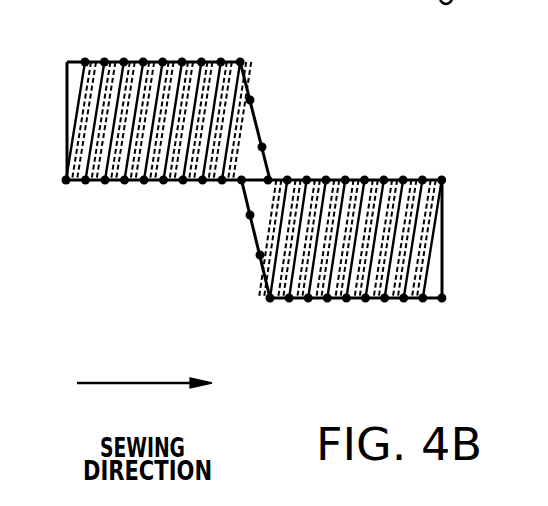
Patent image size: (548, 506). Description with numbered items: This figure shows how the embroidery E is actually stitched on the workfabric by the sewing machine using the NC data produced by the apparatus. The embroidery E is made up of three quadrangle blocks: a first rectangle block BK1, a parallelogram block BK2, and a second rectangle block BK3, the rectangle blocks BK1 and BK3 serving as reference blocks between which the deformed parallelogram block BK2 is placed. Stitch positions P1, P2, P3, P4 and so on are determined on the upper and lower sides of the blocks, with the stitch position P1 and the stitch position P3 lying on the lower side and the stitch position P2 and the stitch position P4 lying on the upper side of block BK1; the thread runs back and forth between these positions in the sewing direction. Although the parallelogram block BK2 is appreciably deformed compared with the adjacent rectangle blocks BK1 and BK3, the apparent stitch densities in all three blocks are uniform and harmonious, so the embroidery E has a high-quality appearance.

The embroidery E is at (430, 116).
The rectangle block BK1 is at (157, 192).
The parallelogram block BK2 is at (266, 141).
The rectangle block BK3 is at (352, 305).
The stitch position P1 is at (67, 184).
The stitch position P2 is at (86, 60).
The stitch position P3 is at (87, 184).
The stitch position P4 is at (107, 60).